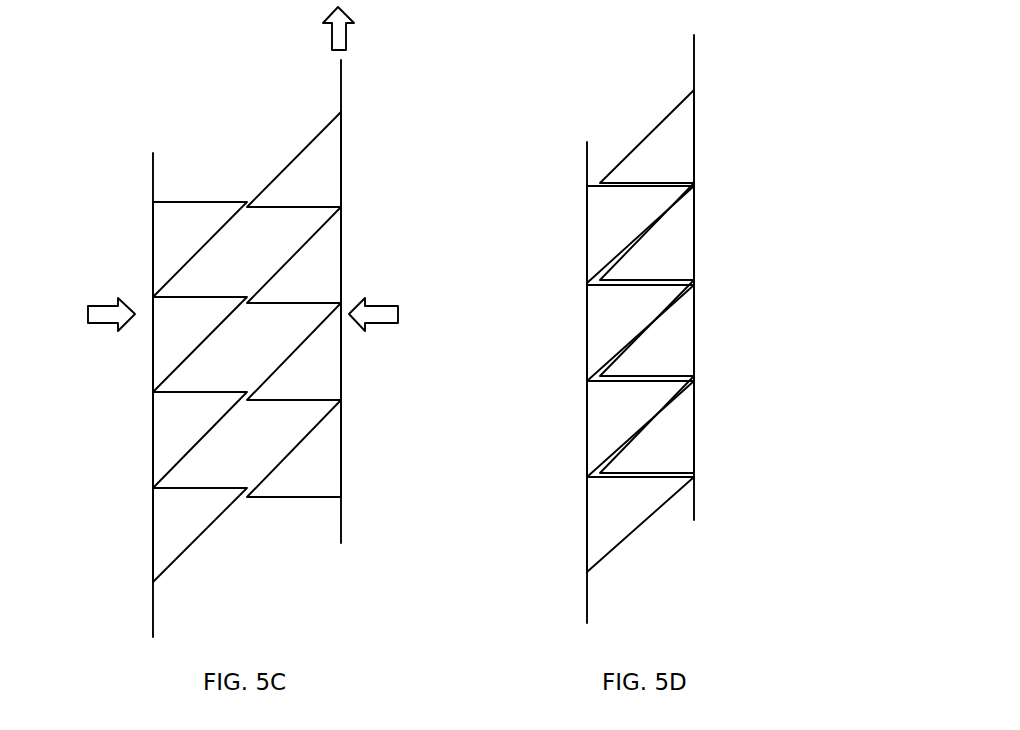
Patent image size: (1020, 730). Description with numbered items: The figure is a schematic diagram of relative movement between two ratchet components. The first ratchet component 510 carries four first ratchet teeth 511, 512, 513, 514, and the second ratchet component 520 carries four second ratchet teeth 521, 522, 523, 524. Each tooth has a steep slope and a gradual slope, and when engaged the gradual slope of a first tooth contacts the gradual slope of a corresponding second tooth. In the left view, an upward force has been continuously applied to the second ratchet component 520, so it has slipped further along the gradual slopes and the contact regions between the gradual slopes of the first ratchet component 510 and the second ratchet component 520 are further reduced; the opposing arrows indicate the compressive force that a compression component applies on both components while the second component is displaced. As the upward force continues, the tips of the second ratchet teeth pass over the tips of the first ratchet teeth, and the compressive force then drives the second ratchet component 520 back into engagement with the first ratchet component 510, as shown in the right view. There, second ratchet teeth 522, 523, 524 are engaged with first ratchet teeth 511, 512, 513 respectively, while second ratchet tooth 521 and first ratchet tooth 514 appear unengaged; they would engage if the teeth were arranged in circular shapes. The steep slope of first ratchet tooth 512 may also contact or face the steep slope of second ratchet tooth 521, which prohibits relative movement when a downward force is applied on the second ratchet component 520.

In FIG. 5C, the first ratchet component 510 is at (152, 415).
In FIG. 5D, the first ratchet component 510 is at (586, 313).
In FIG. 5C, the first ratchet tooth 511 is at (200, 249).
In FIG. 5D, the first ratchet tooth 511 is at (640, 234).
In FIG. 5C, the first ratchet tooth 512 is at (200, 344).
In FIG. 5D, the first ratchet tooth 512 is at (640, 333).
In FIG. 5C, the first ratchet tooth 513 is at (200, 440).
In FIG. 5D, the first ratchet tooth 513 is at (640, 429).
In FIG. 5C, the first ratchet tooth 514 is at (200, 535).
In FIG. 5D, the first ratchet tooth 514 is at (640, 524).
In FIG. 5C, the second ratchet component 520 is at (342, 383).
In FIG. 5D, the second ratchet component 520 is at (695, 258).
In FIG. 5C, the second ratchet tooth 521 is at (294, 159).
In FIG. 5D, the second ratchet tooth 521 is at (647, 136).
In FIG. 5C, the second ratchet tooth 522 is at (294, 255).
In FIG. 5D, the second ratchet tooth 522 is at (647, 231).
In FIG. 5C, the second ratchet tooth 523 is at (294, 351).
In FIG. 5D, the second ratchet tooth 523 is at (647, 328).
In FIG. 5C, the second ratchet tooth 524 is at (294, 448).
In FIG. 5D, the second ratchet tooth 524 is at (647, 424).